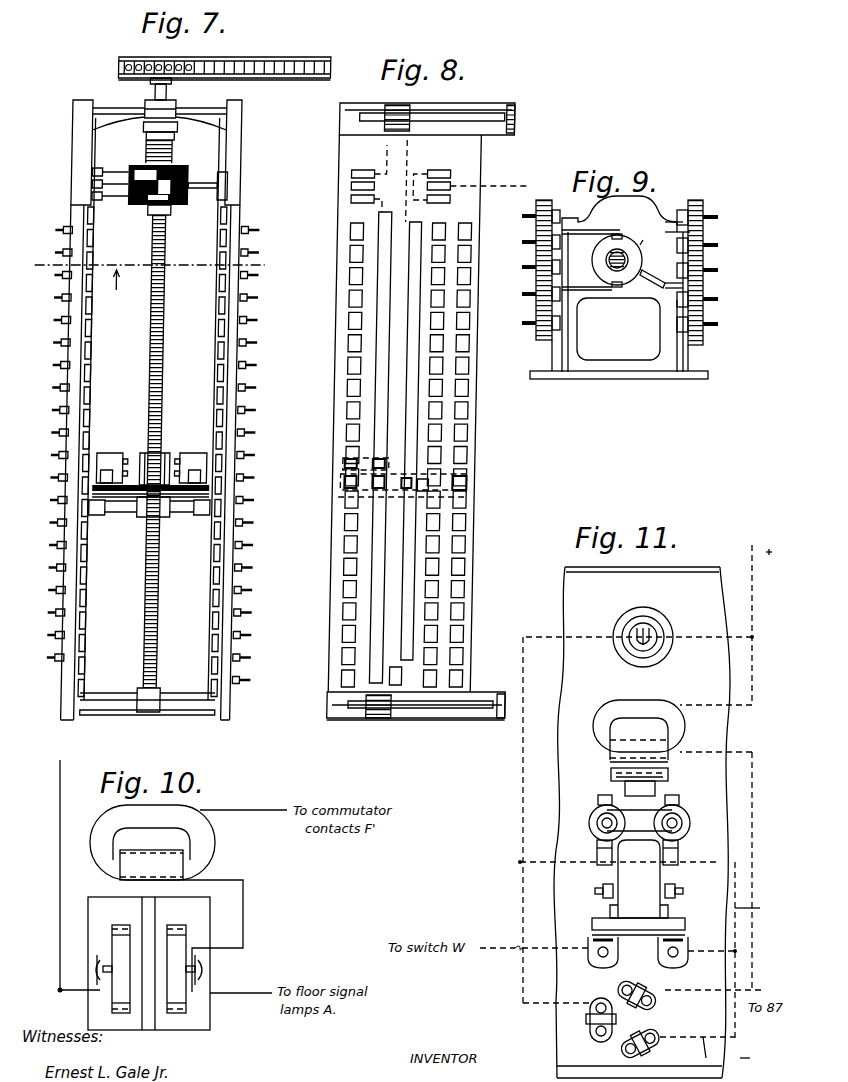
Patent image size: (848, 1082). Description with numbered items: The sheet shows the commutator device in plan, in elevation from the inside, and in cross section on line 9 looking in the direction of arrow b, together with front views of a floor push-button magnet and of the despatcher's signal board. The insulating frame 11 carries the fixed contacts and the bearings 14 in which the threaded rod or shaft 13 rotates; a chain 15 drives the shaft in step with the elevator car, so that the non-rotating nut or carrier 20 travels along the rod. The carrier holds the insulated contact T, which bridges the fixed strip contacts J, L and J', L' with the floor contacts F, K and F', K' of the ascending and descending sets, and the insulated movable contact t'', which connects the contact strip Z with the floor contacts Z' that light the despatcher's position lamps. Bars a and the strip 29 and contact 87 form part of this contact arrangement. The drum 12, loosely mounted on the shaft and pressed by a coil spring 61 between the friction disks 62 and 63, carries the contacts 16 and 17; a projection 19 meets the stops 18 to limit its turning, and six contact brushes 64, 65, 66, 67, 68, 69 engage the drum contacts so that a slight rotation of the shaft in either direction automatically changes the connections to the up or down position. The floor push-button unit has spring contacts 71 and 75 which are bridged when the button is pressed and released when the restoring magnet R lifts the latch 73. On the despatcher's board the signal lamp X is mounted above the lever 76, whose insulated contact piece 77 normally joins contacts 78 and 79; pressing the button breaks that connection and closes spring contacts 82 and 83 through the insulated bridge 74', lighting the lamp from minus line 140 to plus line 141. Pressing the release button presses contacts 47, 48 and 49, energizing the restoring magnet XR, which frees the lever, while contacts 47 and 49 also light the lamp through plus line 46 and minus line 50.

In FIG. 7, the section line 9 is at (150, 266).
In FIG. 7, the insulating frame 11 is at (78, 215).
In FIG. 9, the insulating frame 11 is at (540, 340).
In FIG. 7, the drum 12 is at (187, 169).
In FIG. 9, the drum 12 is at (607, 250).
In FIG. 7, the threaded rod or shaft 13 is at (170, 595).
In FIG. 7, the bearings 14 is at (168, 112).
In FIG. 9, the bearings 14 is at (614, 370).
In FIG. 7, the chain 15 is at (276, 72).
In FIG. 9, the contact 16 is at (651, 234).
In FIG. 9, the contact 17 is at (605, 278).
In FIG. 7, the stops 18 is at (229, 178).
In FIG. 9, the stops 18 is at (672, 220).
In FIG. 7, the projection 19 is at (205, 190).
In FIG. 9, the projection 19 is at (661, 271).
In FIG. 7, the nut or carrier 20 is at (176, 455).
In FIG. 8, the contact strip 29 is at (418, 686).
In FIG. 11, the plus line 46 is at (518, 975).
In FIG. 11, the contact 47 is at (596, 1040).
In FIG. 11, the contact 48 is at (660, 1002).
In FIG. 11, the contact 49 is at (660, 1045).
In FIG. 11, the minus line 50 is at (706, 1054).
In FIG. 7, the coil spring 61 is at (152, 147).
In FIG. 7, the friction disk 62 is at (150, 208).
In FIG. 7, the friction disk 63 is at (144, 165).
In FIG. 7, the contact brush 64 is at (94, 172).
In FIG. 8, the contact brush 64 is at (366, 173).
In FIG. 9, the contact brush 64 is at (585, 229).
In FIG. 7, the contact brush 65 is at (94, 184).
In FIG. 8, the contact brush 65 is at (353, 186).
In FIG. 9, the contact brush 65 is at (595, 231).
In FIG. 7, the contact brush 66 is at (94, 196).
In FIG. 8, the contact brush 66 is at (353, 199).
In FIG. 9, the contact brush 66 is at (612, 231).
In FIG. 8, the contact brush 67 is at (436, 172).
In FIG. 9, the contact brush 67 is at (583, 291).
In FIG. 8, the contact brush 68 is at (446, 186).
In FIG. 9, the contact brush 68 is at (605, 291).
In FIG. 8, the contact brush 69 is at (447, 202).
In FIG. 9, the contact brush 69 is at (620, 291).
In FIG. 10, the spring contact 71 is at (114, 990).
In FIG. 11, the latch 73 is at (668, 776).
In FIG. 11, the insulated bridge 74' is at (639, 818).
In FIG. 10, the spring contact 75 is at (178, 997).
In FIG. 11, the lever 76 is at (622, 872).
In FIG. 11, the insulated contact piece 77 is at (600, 926).
In FIG. 11, the contact 78 is at (603, 968).
In FIG. 11, the contact 79 is at (680, 968).
In FIG. 11, the spring contact 82 is at (597, 851).
In FIG. 11, the spring contact 83 is at (678, 851).
In FIG. 8, the contact 87 is at (455, 672).
In FIG. 11, the minus line 140 is at (762, 917).
In FIG. 11, the plus line 141 is at (535, 866).
In FIG. 7, the contact bars a is at (103, 387).
In FIG. 7, the arrow b is at (120, 287).
In FIG. 7, the contact T is at (106, 465).
In FIG. 7, the insulated movable contact t'' is at (149, 523).
In FIG. 10, the restoring magnet R is at (205, 851).
In FIG. 11, the despatcher's signal lamp X is at (632, 628).
In FIG. 11, the restoring magnet XR is at (622, 712).
In FIG. 9, the floor contact F is at (711, 210).
In FIG. 9, the fixed strip contact L is at (713, 239).
In FIG. 9, the fixed strip contact J is at (712, 267).
In FIG. 9, the floor contact K is at (719, 292).
In FIG. 9, the contact strip Z is at (715, 318).
In FIG. 8, the floor contact F' is at (324, 455).
In FIG. 9, the floor contact F' is at (541, 194).
In FIG. 8, the fixed strip contact L' is at (397, 447).
In FIG. 9, the fixed strip contact L' is at (532, 241).
In FIG. 8, the fixed strip contact J' is at (394, 441).
In FIG. 9, the fixed strip contact J' is at (529, 279).
In FIG. 8, the floor contact K' is at (463, 447).
In FIG. 9, the floor contact K' is at (531, 305).
In FIG. 8, the contacts Z' is at (477, 455).
In FIG. 9, the contacts Z' is at (527, 362).